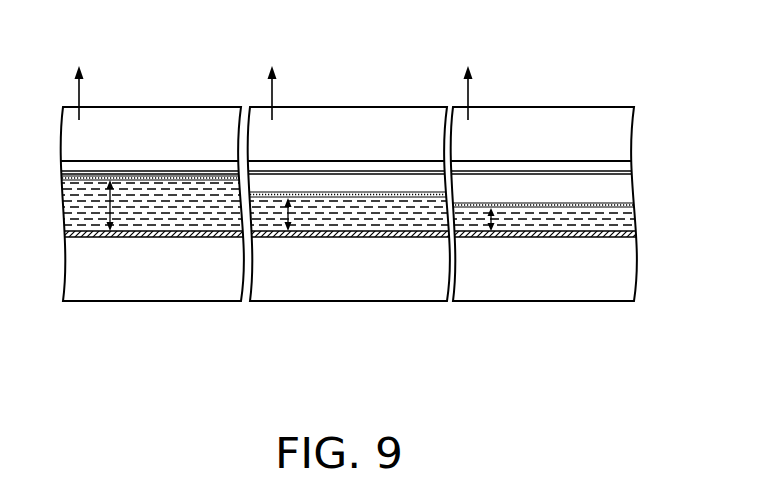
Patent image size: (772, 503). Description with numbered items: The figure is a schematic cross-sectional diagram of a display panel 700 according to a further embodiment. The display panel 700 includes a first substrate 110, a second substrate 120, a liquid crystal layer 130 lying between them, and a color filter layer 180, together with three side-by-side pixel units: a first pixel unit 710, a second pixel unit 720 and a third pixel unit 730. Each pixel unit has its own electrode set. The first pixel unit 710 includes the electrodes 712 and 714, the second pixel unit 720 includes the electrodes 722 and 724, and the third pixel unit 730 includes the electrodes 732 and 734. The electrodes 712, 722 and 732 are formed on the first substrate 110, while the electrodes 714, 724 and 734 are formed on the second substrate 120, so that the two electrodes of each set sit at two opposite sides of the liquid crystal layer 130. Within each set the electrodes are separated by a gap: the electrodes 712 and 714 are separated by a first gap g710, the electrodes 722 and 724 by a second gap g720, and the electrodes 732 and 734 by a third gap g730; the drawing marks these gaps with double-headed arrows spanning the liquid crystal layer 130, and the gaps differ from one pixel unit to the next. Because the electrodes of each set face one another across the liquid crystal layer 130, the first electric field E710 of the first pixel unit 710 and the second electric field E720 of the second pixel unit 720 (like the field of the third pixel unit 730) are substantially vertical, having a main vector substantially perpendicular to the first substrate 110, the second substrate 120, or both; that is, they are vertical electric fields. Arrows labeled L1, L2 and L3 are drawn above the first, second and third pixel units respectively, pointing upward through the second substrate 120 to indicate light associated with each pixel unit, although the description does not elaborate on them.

The display panel 700 is at (375, 208).
The first pixel unit 710 is at (578, 63).
The electrode 712 is at (523, 231).
The electrode 714 is at (545, 204).
The second pixel unit 720 is at (397, 63).
The electrode 722 is at (327, 231).
The electrode 724 is at (370, 193).
The third pixel unit 730 is at (192, 63).
The electrode 732 is at (134, 231).
The electrode 734 is at (172, 177).
The first substrate 110 is at (80, 272).
The second substrate 120 is at (85, 138).
The liquid crystal layer 130 is at (88, 205).
The color filter layer 180 is at (639, 164).
The first light L1 is at (465, 90).
The second light L2 is at (265, 88).
The third light L3 is at (72, 88).
The first gap g710 is at (493, 219).
The second gap g720 is at (290, 214).
The third gap g730 is at (112, 205).
The first electric field E710 is at (597, 214).
The second electric field E720 is at (398, 200).